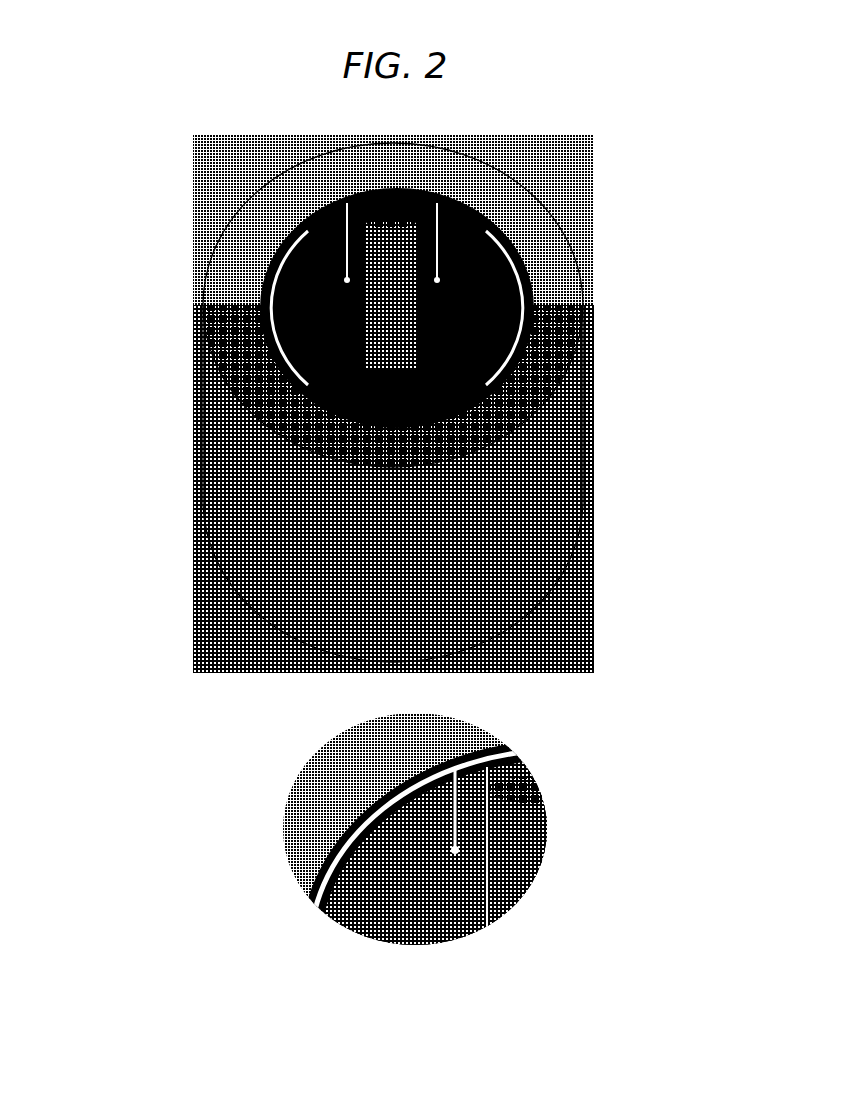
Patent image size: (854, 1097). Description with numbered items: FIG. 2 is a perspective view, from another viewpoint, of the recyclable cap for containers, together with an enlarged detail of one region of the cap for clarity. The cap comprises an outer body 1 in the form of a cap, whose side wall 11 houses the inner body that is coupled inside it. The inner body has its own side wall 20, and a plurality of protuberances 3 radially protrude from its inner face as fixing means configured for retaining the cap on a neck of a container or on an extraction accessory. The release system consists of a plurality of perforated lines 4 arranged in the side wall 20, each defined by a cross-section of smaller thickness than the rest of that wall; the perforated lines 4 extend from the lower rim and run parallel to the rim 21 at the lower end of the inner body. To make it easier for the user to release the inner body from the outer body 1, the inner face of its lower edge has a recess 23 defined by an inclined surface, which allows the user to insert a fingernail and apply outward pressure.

The outer body 1 is at (574, 229).
The protuberances 3 is at (365, 338).
The perforated lines 4 is at (345, 270).
The side wall 11 is at (285, 515).
The side wall 20 is at (470, 298).
The rim 21 is at (505, 238).
The recess 23 is at (275, 262).